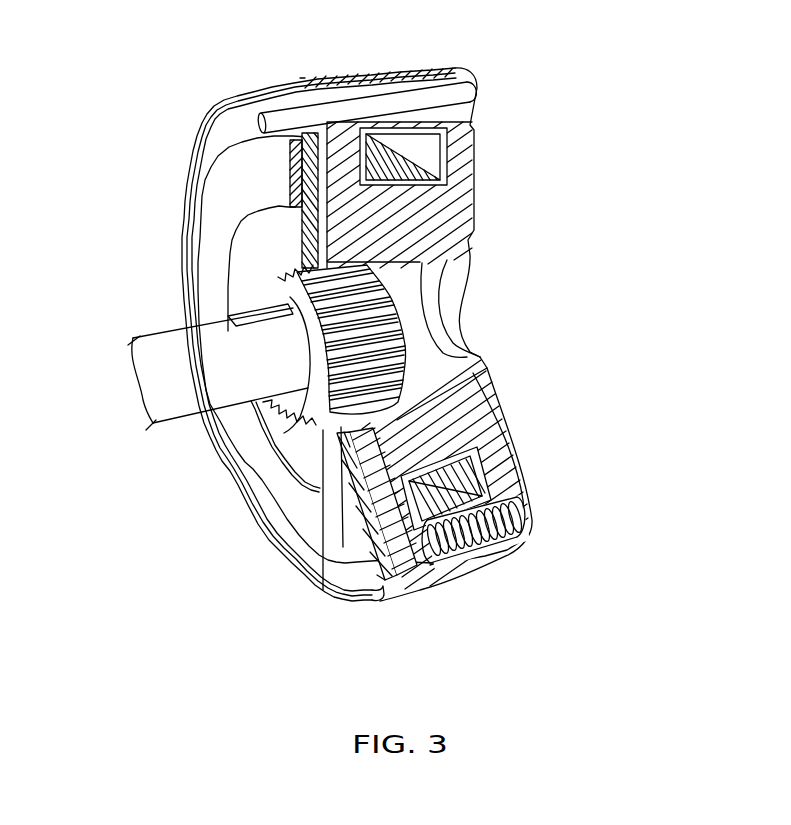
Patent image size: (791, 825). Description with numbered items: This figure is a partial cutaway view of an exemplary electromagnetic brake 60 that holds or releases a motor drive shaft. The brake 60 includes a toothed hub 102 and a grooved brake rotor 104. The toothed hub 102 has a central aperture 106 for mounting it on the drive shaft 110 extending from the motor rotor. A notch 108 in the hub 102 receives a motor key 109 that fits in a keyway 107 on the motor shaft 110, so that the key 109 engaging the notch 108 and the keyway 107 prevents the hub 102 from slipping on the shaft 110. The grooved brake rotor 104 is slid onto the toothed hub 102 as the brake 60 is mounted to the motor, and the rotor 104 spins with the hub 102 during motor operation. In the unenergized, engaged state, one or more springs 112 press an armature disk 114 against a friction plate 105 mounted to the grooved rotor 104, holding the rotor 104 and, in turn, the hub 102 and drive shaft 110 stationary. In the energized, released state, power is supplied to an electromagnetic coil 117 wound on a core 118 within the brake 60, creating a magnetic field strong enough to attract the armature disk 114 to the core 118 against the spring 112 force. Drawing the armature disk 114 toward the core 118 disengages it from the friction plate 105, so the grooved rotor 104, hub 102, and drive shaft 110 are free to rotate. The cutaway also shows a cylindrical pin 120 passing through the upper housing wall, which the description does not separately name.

The brake 60 is at (149, 50).
The toothed hub 102 is at (323, 585).
The grooved brake rotor 104 is at (343, 547).
The friction plate 105 is at (397, 548).
The central aperture 106 is at (302, 408).
The keyway 107 is at (275, 335).
The notch 108 is at (280, 305).
The motor key 109 is at (237, 333).
The drive shaft 110 is at (155, 325).
The spring 112 is at (523, 528).
The armature disk 114 is at (338, 234).
The electromagnetic coil 117 is at (440, 152).
The core 118 is at (427, 203).
The pin 120 is at (288, 277).